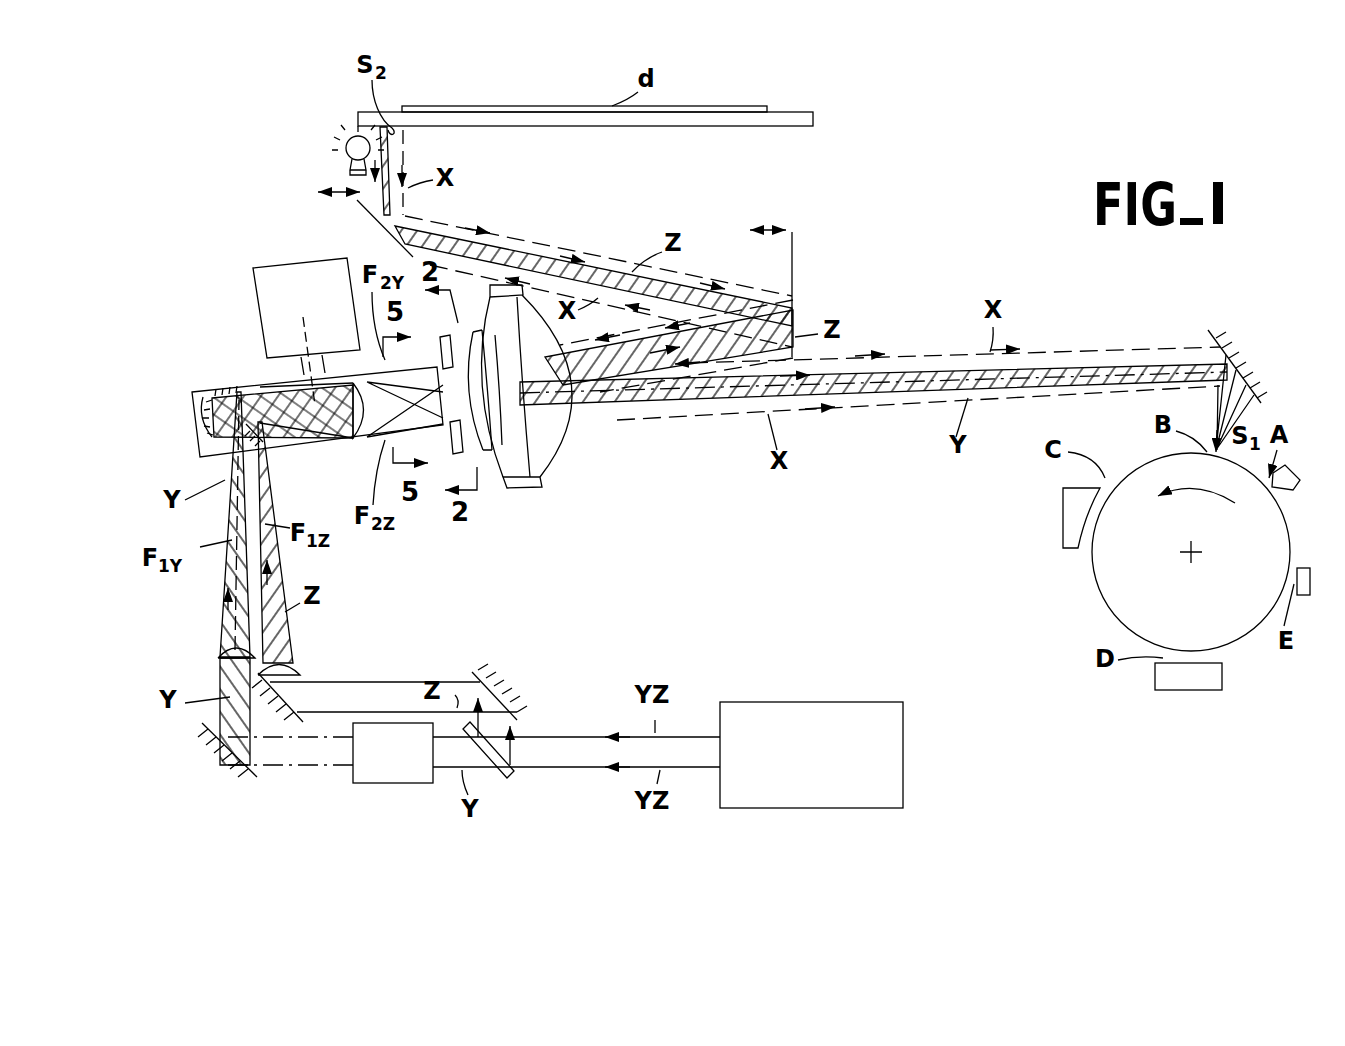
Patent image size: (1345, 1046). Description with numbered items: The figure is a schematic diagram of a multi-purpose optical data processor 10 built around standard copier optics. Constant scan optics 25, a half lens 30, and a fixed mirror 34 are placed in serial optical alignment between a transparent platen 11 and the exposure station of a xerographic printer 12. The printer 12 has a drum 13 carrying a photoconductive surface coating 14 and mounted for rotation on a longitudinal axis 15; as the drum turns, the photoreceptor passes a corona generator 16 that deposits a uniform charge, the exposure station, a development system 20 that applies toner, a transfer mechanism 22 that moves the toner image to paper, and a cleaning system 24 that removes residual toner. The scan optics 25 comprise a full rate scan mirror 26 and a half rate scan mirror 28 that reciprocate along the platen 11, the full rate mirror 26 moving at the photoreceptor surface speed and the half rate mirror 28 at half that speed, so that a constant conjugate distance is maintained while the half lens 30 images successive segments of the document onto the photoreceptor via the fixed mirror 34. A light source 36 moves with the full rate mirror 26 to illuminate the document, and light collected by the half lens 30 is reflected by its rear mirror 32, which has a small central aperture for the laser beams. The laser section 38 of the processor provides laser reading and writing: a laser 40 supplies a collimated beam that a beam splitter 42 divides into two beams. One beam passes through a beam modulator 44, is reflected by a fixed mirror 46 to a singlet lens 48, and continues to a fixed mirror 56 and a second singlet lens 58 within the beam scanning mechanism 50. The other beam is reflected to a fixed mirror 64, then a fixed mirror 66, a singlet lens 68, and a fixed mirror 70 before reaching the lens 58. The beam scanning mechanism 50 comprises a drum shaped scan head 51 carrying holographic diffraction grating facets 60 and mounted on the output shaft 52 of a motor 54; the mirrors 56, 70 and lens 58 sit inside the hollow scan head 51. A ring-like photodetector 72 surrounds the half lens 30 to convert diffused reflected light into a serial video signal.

The optical data processor 10 is at (962, 145).
The transparent platen 11 is at (792, 112).
The xerographic printer 12 is at (1242, 652).
The drum 13 is at (1102, 575).
The photoconductive surface coating 14 is at (1147, 464).
The longitudinal axis 15 is at (1193, 556).
The corona generator 16 is at (1295, 490).
The development system 20 is at (1062, 536).
The transfer mechanism 22 is at (1192, 690).
The cleaning system 24 is at (1311, 576).
The constant scan optics 25 is at (580, 216).
The full rate scan mirror 26 is at (356, 203).
The half rate scan mirror 28 is at (795, 250).
The half lens 30 is at (562, 456).
The rear mirror 32 is at (446, 338).
The fixed mirror 34 is at (1214, 335).
The light source 36 is at (345, 160).
The laser beam generating section 38 is at (380, 611).
The laser 40 is at (905, 756).
The beam splitter 42 is at (508, 778).
The beam modulator 44 is at (393, 785).
The fixed mirror 46 is at (240, 775).
The singlet lens 48 is at (222, 654).
The beam scanning mechanism 50 is at (236, 362).
The scan head 51 is at (200, 438).
The output shaft 52 is at (302, 366).
The motor 54 is at (268, 265).
The fixed mirror 56 is at (205, 395).
The singlet lens 58 is at (361, 438).
The holographic diffraction gratings 60 is at (445, 357).
The fixed mirror 64 is at (486, 682).
The fixed mirror 66 is at (277, 706).
The singlet lens 68 is at (300, 669).
The fixed mirror 70 is at (262, 445).
The photodetector 72 is at (530, 490).